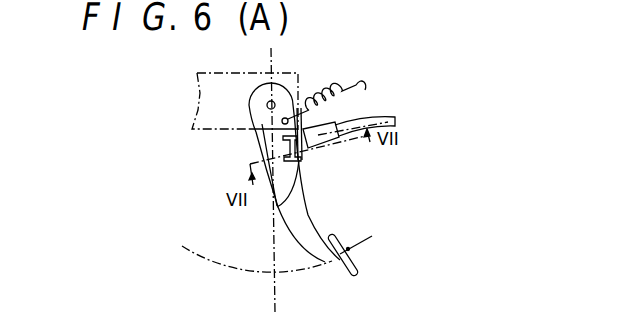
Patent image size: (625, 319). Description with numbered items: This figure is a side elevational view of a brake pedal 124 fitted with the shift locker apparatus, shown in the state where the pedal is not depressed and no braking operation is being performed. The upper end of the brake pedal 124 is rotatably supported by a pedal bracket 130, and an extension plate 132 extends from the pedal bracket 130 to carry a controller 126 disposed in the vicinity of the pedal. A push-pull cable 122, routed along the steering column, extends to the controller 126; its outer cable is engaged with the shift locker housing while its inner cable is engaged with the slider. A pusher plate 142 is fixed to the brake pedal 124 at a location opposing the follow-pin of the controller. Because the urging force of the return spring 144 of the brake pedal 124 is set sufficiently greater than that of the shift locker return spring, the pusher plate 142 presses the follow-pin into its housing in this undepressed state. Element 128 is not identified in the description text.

The push-pull cable 122 is at (388, 118).
The brake pedal 124 is at (303, 210).
The controller 126 is at (328, 145).
The pivot lever 128 is at (267, 109).
The pedal bracket 130 is at (287, 71).
The extension plate 132 is at (307, 149).
The pusher plate 142 is at (276, 207).
The return spring 144 is at (323, 92).